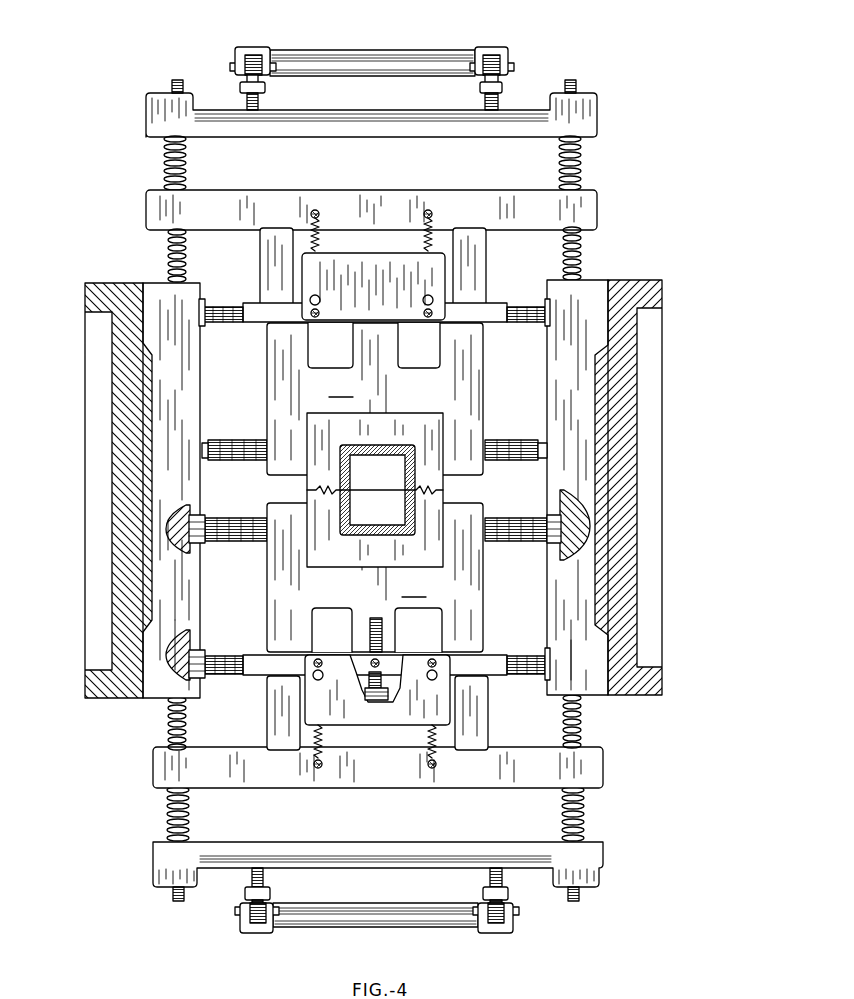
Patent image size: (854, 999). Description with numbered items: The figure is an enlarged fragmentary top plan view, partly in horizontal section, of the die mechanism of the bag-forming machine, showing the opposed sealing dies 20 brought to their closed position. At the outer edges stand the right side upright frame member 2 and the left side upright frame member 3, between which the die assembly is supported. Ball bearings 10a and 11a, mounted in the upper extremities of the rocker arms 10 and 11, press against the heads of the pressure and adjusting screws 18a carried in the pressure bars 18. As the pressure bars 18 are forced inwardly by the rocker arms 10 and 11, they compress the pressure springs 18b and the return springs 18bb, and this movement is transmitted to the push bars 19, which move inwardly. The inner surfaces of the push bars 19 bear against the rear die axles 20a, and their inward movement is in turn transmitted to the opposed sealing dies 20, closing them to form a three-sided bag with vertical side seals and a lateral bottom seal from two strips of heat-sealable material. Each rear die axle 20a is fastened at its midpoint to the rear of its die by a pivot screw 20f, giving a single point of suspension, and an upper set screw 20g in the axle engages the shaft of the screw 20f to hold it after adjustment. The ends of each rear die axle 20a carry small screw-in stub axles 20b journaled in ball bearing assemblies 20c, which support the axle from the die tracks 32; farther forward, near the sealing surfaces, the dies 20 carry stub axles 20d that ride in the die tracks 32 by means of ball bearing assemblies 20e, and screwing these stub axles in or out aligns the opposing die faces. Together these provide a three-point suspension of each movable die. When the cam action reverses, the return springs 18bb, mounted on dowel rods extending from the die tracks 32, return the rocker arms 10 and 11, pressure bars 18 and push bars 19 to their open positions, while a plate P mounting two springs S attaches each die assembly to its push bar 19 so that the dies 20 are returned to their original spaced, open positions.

The right side upright frame member 2 is at (118, 470).
The left side upright frame member 3 is at (625, 515).
The rocker arm 10 is at (372, 62).
The ball bearing 10a is at (240, 60).
The rocker arm 11 is at (388, 912).
The ball bearing 11a is at (255, 920).
The pressure bar 18 is at (415, 118).
The pressure and adjusting screw 18a is at (262, 102).
The pressure spring 18b is at (182, 152).
The return spring 18bb is at (170, 262).
The push bar 19 is at (348, 200).
The sealing die 20 is at (375, 487).
The rear die axle 20a is at (252, 305).
The stub axle 20b is at (226, 324).
The ball bearing assembly 20c is at (203, 302).
The stub axle 20d is at (238, 450).
The ball bearing assembly 20e is at (205, 440).
The pivot screw 20f is at (368, 640).
The upper set screw 20g is at (368, 676).
The die track 32 is at (186, 628).
The plate P is at (455, 278).
The spring S is at (308, 233).